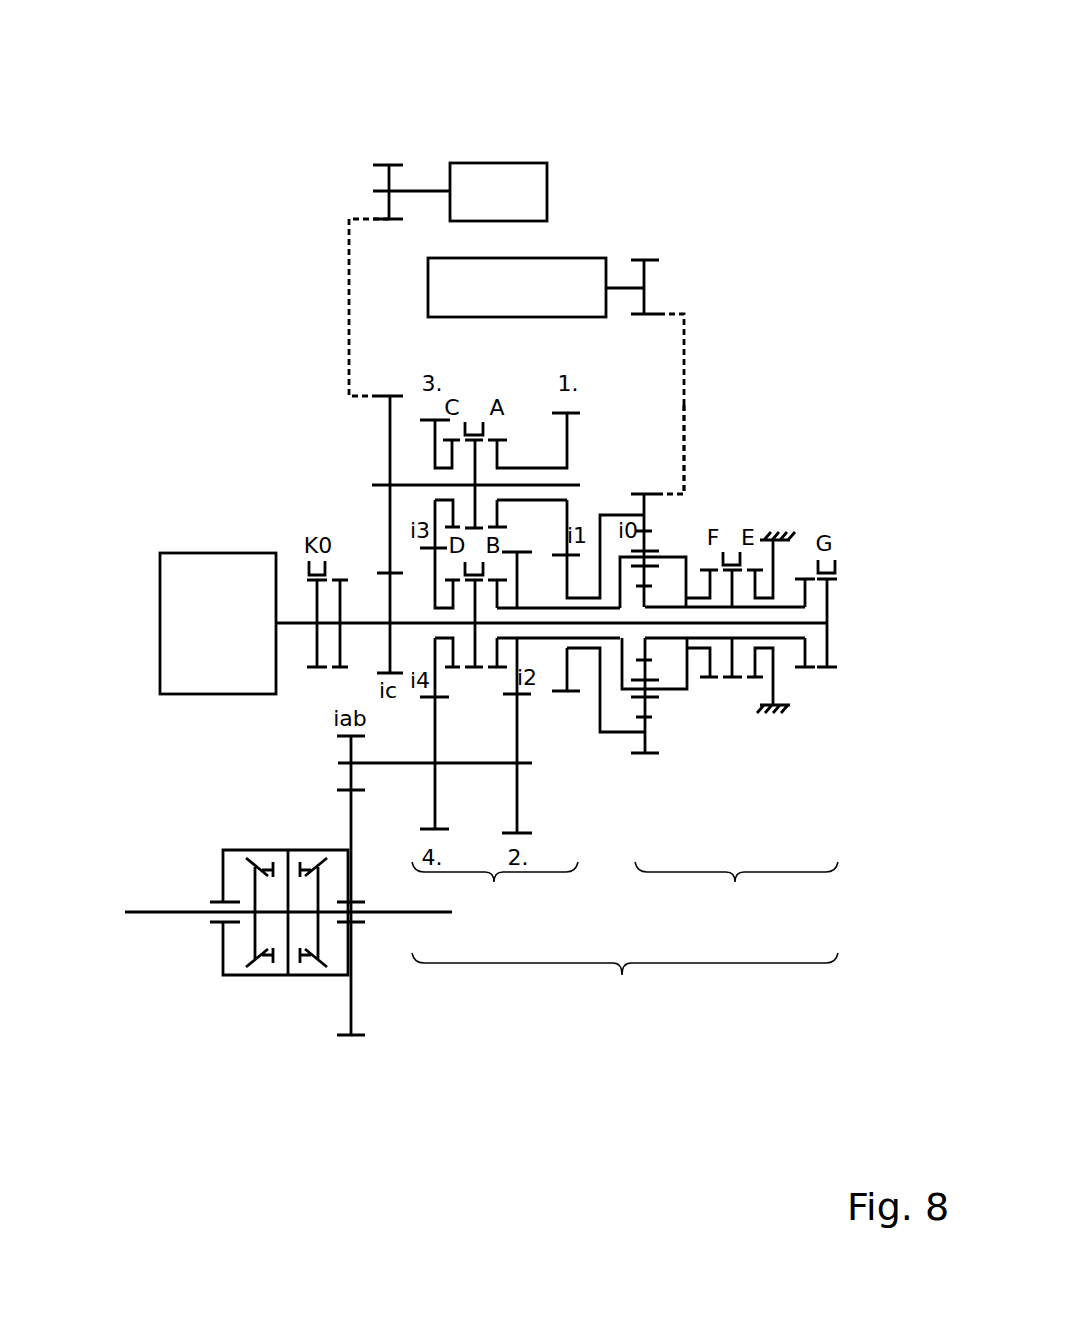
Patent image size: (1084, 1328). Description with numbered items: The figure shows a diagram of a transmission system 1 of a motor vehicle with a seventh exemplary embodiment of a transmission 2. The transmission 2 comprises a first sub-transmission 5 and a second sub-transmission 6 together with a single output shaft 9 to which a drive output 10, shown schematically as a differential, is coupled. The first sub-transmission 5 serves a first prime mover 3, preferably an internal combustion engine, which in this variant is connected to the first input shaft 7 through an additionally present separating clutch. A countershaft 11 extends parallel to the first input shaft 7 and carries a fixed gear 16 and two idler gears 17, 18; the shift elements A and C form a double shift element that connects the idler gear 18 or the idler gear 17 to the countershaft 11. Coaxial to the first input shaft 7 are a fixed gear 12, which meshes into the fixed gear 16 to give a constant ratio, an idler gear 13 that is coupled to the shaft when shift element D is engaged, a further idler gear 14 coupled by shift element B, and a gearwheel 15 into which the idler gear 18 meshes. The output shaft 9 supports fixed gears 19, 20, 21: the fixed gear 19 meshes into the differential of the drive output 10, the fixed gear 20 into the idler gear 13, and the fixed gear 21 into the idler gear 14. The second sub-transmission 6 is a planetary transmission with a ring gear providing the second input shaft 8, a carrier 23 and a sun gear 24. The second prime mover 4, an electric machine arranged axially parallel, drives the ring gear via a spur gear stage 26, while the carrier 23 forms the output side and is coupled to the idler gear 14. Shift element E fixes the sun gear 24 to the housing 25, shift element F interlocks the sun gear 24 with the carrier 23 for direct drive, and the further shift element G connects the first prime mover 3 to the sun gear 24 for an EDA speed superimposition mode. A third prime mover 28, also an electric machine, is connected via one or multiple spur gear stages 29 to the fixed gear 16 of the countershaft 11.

The transmission system 1 is at (759, 136).
The transmission 2 is at (625, 984).
The first prime mover 3 is at (205, 647).
The second prime mover 4 is at (477, 293).
The first sub-transmission 5 is at (495, 893).
The second sub-transmission 6 is at (736, 893).
The first input shaft 7 is at (383, 621).
The second input shaft 8 is at (645, 505).
The output shaft 9 is at (350, 810).
The drive output 10 is at (300, 1026).
The countershaft 11 is at (373, 482).
The fixed gear of the first input shaft 12 is at (385, 648).
The idler gear of the first input shaft 13 is at (432, 573).
The further idler gear 14 is at (517, 580).
The gearwheel 15 is at (567, 660).
The fixed gear of the countershaft 16 is at (388, 442).
The idler gear of the countershaft 17 is at (433, 440).
The idler gear of the countershaft 18 is at (567, 440).
The fixed gear of the output shaft 19 is at (420, 765).
The fixed gear of the output shaft 20 is at (437, 780).
The fixed gear of the output shaft 21 is at (518, 773).
The carrier 23 is at (660, 552).
The sun gear 24 is at (645, 647).
The housing 25 is at (790, 712).
The spur gear stage 26 is at (685, 453).
The third prime mover 28 is at (537, 200).
The spur gear stage 29 is at (348, 355).